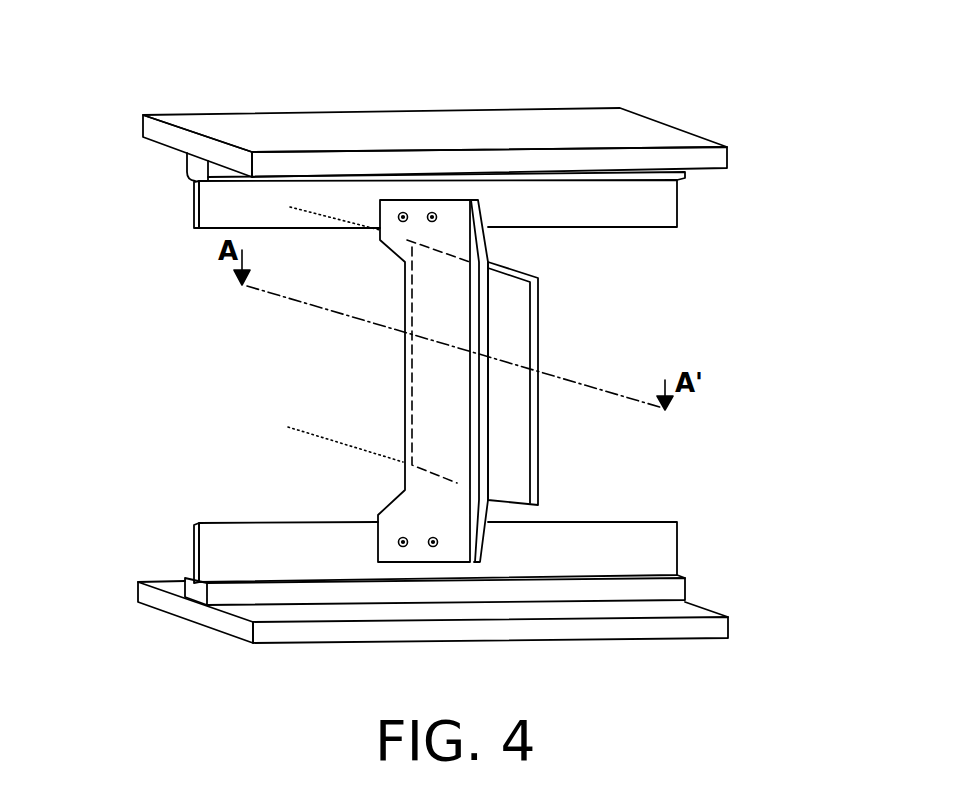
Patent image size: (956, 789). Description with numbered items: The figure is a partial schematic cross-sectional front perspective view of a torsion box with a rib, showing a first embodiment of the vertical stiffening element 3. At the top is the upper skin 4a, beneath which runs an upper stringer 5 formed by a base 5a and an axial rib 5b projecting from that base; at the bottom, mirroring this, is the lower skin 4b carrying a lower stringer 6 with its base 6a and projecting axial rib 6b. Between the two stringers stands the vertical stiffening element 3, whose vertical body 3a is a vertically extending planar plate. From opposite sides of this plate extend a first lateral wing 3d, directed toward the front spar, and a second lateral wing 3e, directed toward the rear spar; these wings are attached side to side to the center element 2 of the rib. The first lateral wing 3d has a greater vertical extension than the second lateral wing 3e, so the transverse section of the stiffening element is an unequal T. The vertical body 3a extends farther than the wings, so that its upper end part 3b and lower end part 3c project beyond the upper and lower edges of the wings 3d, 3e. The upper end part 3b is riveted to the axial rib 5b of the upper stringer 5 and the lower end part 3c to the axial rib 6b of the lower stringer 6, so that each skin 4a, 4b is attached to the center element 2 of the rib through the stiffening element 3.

The center element of the rib 2 is at (540, 326).
The vertical stiffening element 3 is at (370, 309).
The vertical body 3a is at (435, 368).
The upper end part 3b is at (402, 215).
The lower end part 3c is at (412, 513).
The first lateral wing 3d is at (480, 242).
The second lateral wing 3e is at (435, 295).
The upper skin 4a is at (610, 130).
The lower skin 4b is at (690, 608).
The upper stringer 5 is at (422, 217).
The base of the upper stringer 5a is at (196, 168).
The axial rib of the upper stringer 5b is at (652, 197).
The lower stringer 6 is at (412, 516).
The base of the lower stringer 6a is at (193, 590).
The axial rib of the lower stringer 6b is at (548, 550).